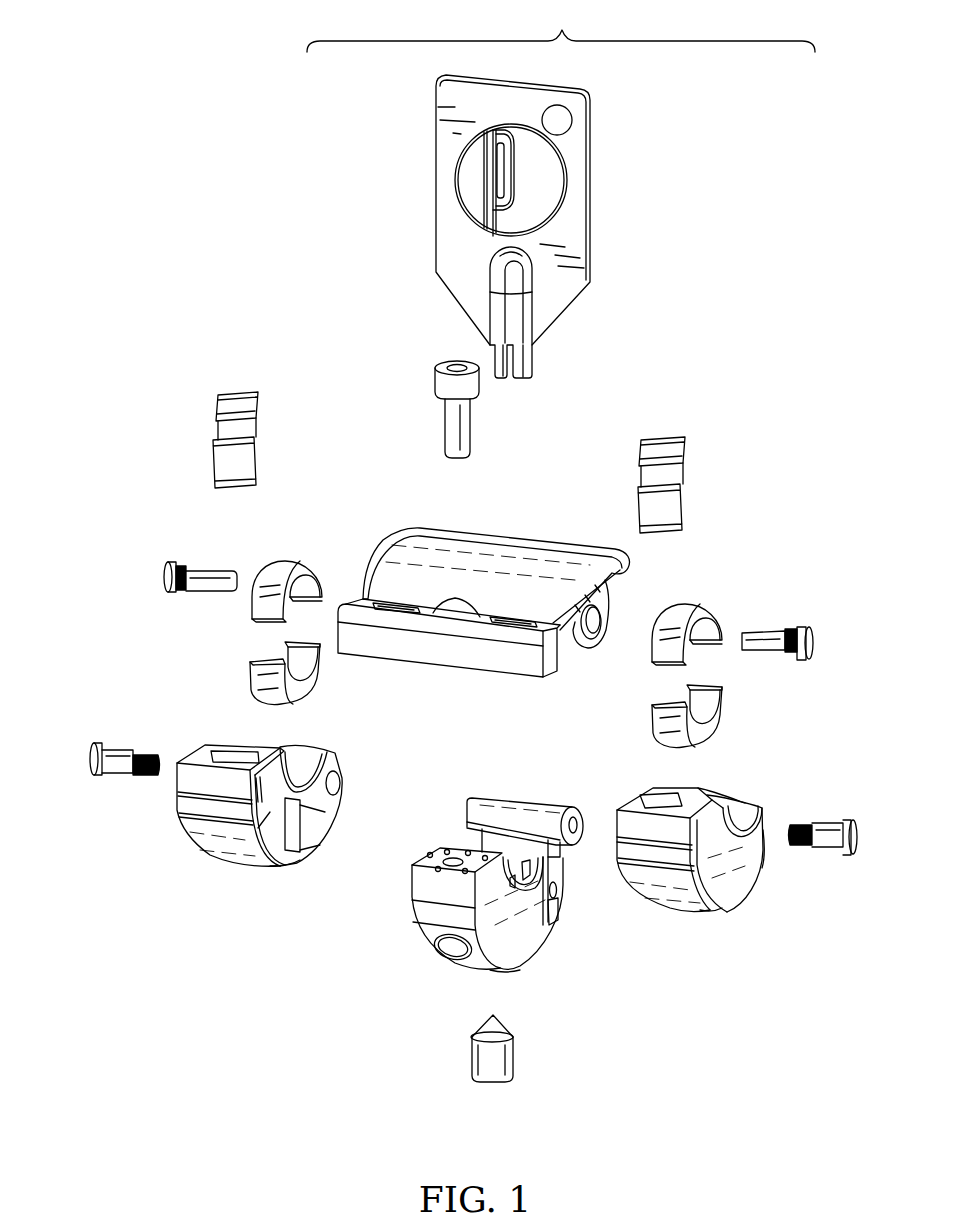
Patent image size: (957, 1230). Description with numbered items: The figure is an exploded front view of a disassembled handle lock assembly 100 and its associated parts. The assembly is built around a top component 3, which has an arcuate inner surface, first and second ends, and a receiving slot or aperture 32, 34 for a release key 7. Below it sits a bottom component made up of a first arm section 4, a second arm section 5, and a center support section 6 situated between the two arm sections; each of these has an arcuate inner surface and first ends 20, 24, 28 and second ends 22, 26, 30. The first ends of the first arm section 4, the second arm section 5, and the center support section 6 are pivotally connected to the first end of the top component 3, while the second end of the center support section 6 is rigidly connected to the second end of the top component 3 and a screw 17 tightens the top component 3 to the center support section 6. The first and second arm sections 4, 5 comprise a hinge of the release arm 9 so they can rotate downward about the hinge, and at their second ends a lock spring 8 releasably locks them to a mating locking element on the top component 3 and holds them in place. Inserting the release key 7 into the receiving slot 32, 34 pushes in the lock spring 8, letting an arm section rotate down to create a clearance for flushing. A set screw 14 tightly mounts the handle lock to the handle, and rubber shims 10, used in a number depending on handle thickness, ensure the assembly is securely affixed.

The handle lock assembly 100 is at (561, 28).
The release key 7 is at (590, 180).
The screw 17 is at (470, 432).
The lock spring 8 is at (250, 432).
The release arm hinge 9 is at (212, 575).
The rubber shims 10 is at (290, 562).
The top component 3 is at (483, 588).
The receiving slot or aperture 34 is at (404, 604).
The receiving slot or aperture 32 is at (519, 616).
The first arm section 4 is at (281, 824).
The first end of second arm section 24 is at (345, 768).
The second end of second arm section 26 is at (279, 866).
The second arm section 5 is at (716, 868).
The first end of first arm section 20 is at (767, 863).
The second end of first arm section 22 is at (724, 910).
The center support section 6 is at (495, 904).
The first end of center support section 28 is at (561, 885).
The second end of center support section 30 is at (503, 972).
The set screw 14 is at (514, 1058).